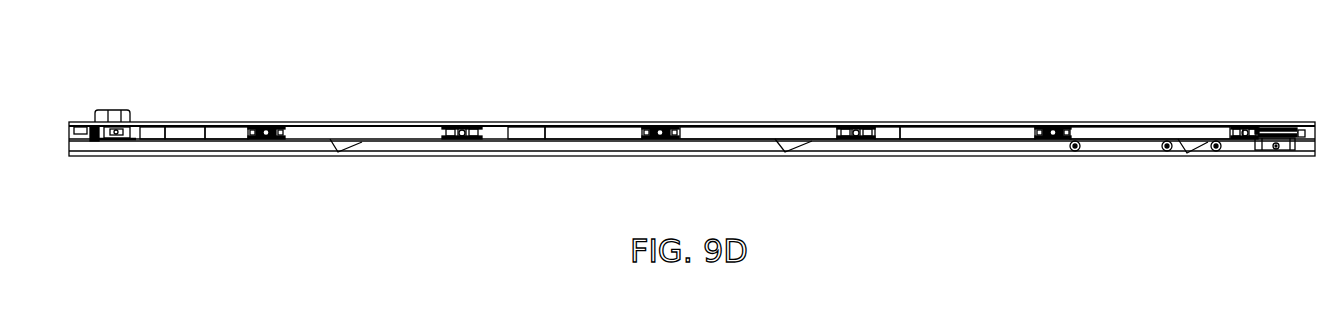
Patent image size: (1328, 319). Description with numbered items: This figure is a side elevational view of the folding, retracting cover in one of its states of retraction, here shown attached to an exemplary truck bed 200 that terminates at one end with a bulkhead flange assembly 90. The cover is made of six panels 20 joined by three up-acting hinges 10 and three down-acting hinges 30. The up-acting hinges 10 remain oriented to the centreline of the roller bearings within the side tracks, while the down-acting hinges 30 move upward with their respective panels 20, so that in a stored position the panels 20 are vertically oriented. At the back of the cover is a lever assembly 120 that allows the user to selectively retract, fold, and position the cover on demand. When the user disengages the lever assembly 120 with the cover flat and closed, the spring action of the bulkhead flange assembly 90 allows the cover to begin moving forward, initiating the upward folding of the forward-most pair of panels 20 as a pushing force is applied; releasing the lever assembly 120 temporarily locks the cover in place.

The up-acting hinge 10 is at (462, 140).
The panel 20 is at (222, 131).
The down-acting hinge 30 is at (269, 140).
The bulkhead flange assembly 90 is at (1285, 152).
The lever assembly 120 is at (100, 107).
The truck bed 200 is at (314, 147).